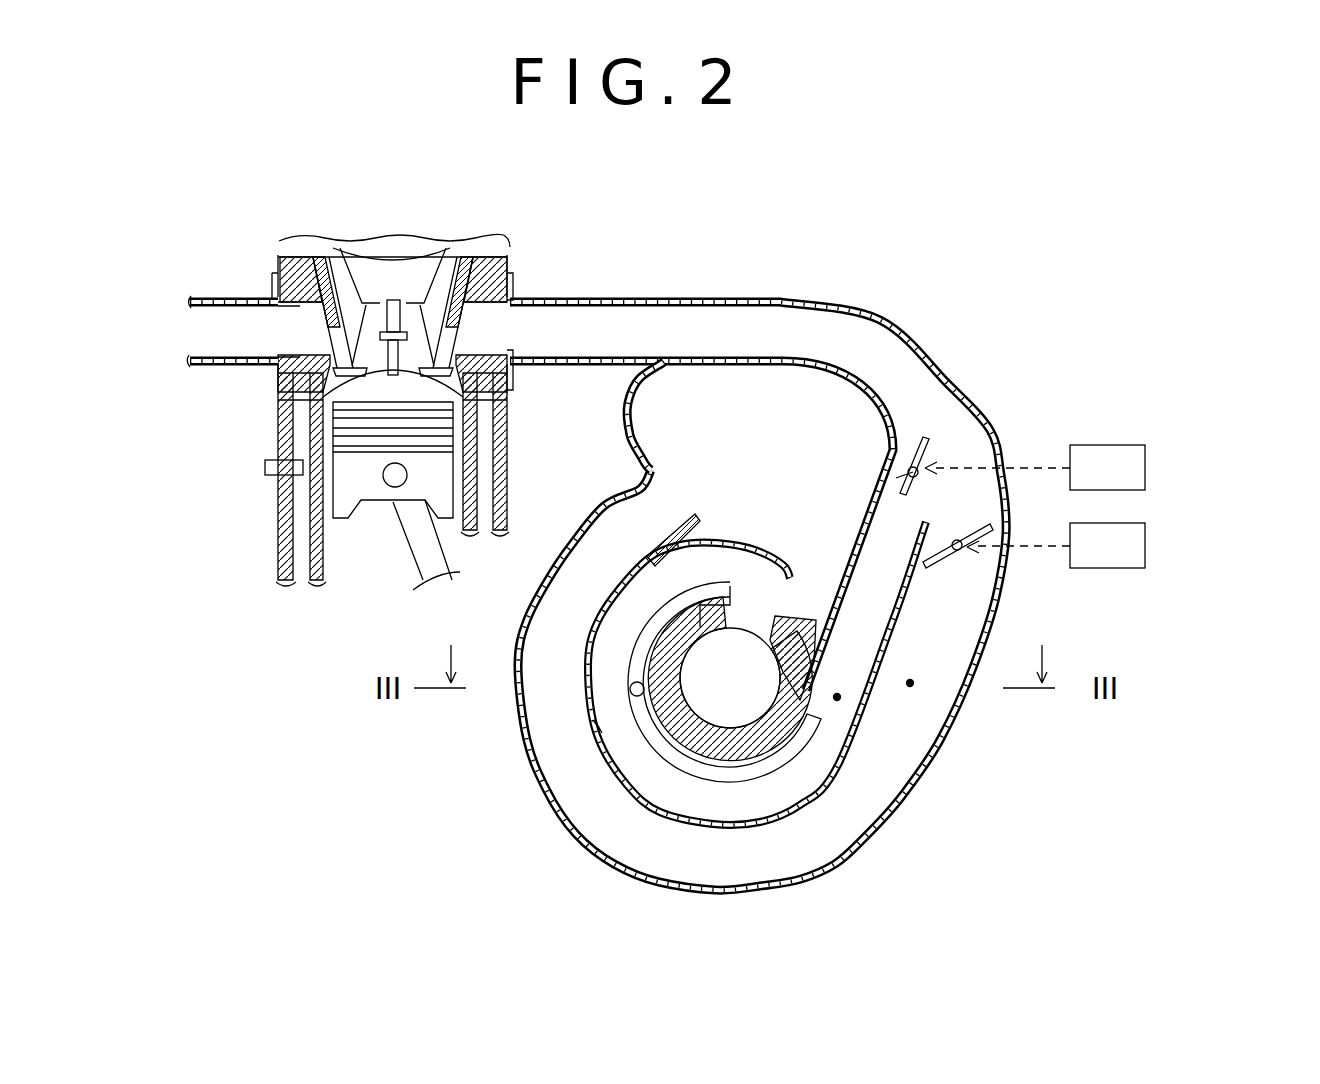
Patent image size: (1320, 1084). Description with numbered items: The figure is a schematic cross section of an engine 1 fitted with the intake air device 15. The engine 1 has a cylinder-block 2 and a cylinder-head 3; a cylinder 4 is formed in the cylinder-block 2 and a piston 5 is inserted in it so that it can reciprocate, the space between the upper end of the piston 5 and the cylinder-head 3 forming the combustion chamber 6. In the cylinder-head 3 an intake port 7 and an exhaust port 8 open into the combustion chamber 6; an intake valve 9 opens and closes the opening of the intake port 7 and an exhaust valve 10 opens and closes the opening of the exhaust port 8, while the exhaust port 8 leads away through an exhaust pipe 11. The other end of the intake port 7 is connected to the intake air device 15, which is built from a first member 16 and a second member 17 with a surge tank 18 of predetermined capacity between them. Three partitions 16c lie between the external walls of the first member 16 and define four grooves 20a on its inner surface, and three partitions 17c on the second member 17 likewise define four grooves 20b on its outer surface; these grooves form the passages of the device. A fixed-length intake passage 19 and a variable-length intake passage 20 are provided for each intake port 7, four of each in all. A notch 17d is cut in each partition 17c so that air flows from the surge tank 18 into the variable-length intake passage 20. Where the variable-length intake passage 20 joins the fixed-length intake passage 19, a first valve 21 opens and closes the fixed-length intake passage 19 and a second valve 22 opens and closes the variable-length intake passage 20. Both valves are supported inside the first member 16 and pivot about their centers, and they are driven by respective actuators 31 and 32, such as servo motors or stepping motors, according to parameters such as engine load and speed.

The engine 1 is at (283, 228).
The cylinder-block 2 is at (283, 530).
The cylinder-head 3 is at (400, 245).
The cylinder 4 is at (347, 567).
The piston 5 is at (343, 487).
The combustion chamber 6 is at (353, 392).
The intake port 7 is at (480, 317).
The exhaust port 8 is at (293, 325).
The intake valve 9 is at (463, 257).
The exhaust valve 10 is at (321, 257).
The intake pipe 11 is at (197, 297).
The intake air device 15 is at (990, 395).
The first member 16 is at (878, 850).
The partition 16c is at (670, 797).
The second member 17 is at (747, 757).
The partition 17c is at (660, 757).
The notch 17d is at (793, 615).
The surge tank 18 is at (720, 430).
The fixed-length intake passage 19 is at (910, 683).
The variable-length intake passage 20 is at (837, 697).
The groove 20a is at (598, 735).
The groove 20b is at (644, 691).
The first valve 21 is at (943, 557).
The second valve 22 is at (907, 477).
The actuator 31 is at (1145, 545).
The actuator 32 is at (1145, 468).